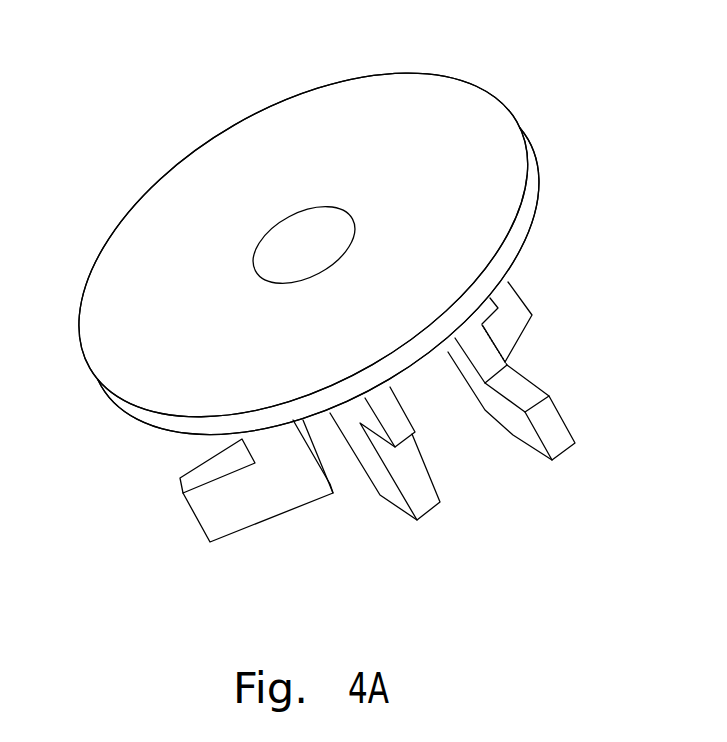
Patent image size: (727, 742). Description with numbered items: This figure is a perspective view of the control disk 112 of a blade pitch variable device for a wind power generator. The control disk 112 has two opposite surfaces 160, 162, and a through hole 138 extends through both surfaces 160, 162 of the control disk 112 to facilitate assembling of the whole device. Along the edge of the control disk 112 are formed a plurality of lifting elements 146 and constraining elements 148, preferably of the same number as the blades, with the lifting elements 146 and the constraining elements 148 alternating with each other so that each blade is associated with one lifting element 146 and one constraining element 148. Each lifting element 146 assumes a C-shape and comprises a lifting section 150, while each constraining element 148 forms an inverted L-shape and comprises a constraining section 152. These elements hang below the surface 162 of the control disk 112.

The control disk 112 is at (473, 100).
The through hole 138 is at (325, 212).
The lifting element 146 is at (263, 525).
The constraining element 148 is at (522, 333).
The lifting section 150 is at (550, 423).
The constraining section 152 is at (397, 413).
The surface 160 is at (142, 223).
The surface 162 is at (145, 423).